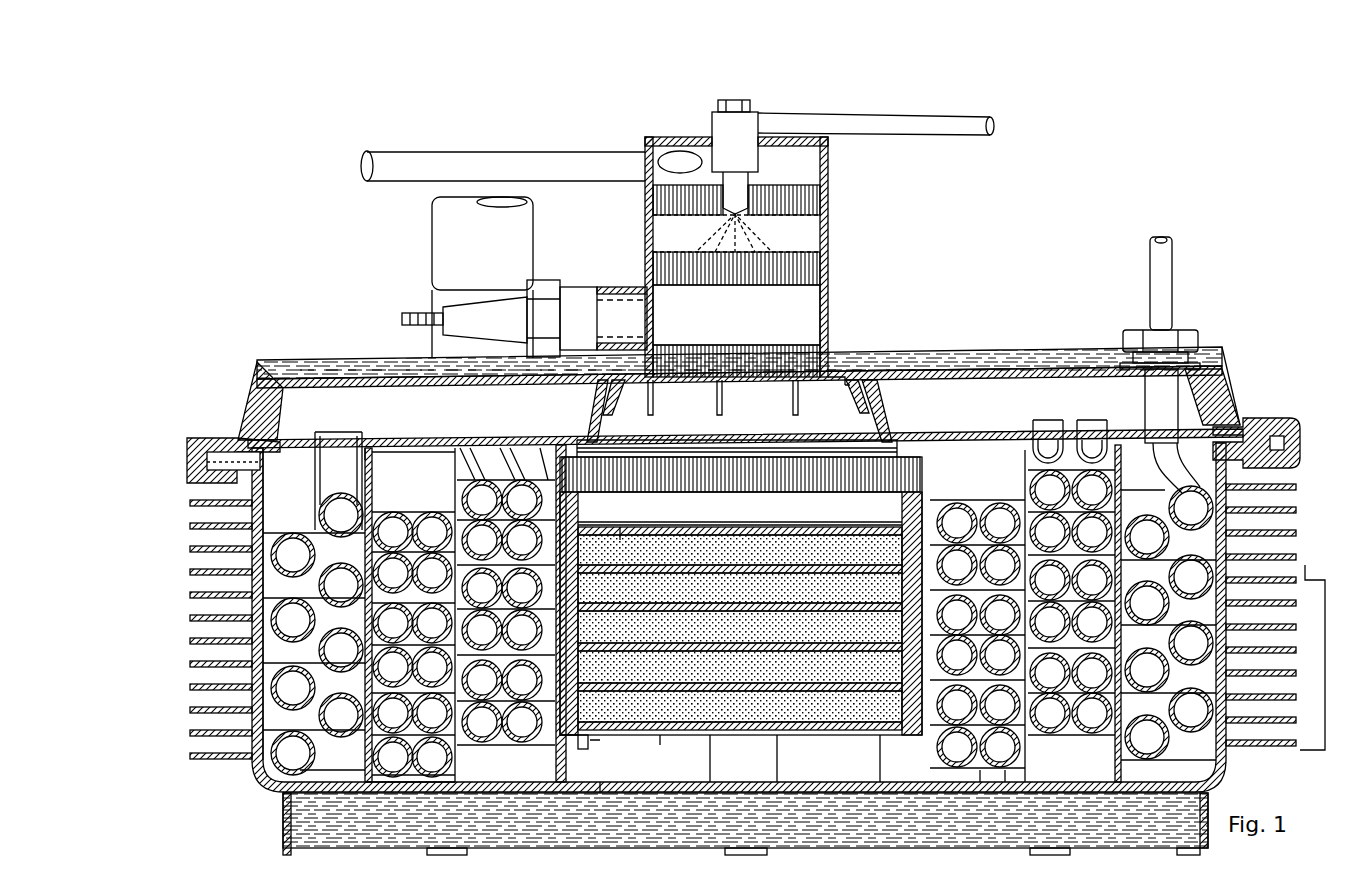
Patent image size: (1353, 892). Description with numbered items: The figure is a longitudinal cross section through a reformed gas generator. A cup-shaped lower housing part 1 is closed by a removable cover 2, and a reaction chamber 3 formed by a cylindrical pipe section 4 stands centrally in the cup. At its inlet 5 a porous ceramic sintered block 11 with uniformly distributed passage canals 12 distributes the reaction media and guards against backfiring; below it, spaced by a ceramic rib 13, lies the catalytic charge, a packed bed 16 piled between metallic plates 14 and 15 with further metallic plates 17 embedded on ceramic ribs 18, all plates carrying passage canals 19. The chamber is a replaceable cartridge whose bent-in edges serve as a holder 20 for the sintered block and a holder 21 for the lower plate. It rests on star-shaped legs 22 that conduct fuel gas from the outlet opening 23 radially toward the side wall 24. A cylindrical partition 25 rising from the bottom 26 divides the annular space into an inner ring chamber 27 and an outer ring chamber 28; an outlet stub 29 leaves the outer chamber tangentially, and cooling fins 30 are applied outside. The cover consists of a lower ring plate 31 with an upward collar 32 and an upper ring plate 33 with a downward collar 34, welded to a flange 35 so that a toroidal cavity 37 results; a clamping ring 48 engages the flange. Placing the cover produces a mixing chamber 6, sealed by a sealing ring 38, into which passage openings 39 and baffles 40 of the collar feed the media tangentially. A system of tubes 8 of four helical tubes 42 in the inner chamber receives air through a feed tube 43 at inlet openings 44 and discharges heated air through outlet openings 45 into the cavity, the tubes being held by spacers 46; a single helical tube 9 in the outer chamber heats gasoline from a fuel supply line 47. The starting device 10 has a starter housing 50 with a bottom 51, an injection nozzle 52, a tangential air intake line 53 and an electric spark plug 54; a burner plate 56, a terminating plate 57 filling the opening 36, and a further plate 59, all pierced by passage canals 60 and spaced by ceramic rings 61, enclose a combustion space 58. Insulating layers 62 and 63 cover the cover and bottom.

The lower housing part 1 is at (283, 790).
The removable cover 2 is at (726, 385).
The reaction chamber 3 is at (741, 587).
The cylindrical pipe section 4 is at (557, 738).
The inlet 5 is at (693, 455).
The mixing chamber 6 is at (848, 395).
The system of tubes 8 is at (1005, 775).
The tube 9 is at (300, 545).
The starting device 10 is at (677, 238).
The sintered block 11 is at (700, 500).
The passage canals 12 is at (650, 498).
The ceramic rib 13 is at (578, 510).
The metallic plate 14 is at (760, 527).
The metallic plate 15 is at (672, 738).
The packed bed 16 is at (625, 545).
The metallic plates 17 is at (715, 580).
The ceramic ribs 18 is at (592, 600).
The passage canals 19 is at (655, 580).
The holder 20 is at (566, 448).
The holder 21 is at (580, 740).
The legs 22 is at (693, 765).
The outlet opening 23 is at (850, 735).
The side wall 24 is at (263, 490).
The cylindrical partition 25 is at (382, 788).
The bottom 26 is at (420, 788).
The inner ring chamber 27 is at (395, 440).
The outer ring chamber 28 is at (300, 462).
The outlet stub 29 is at (1315, 645).
The cooling fins 30 is at (1300, 498).
The lower ring plate 31 is at (418, 438).
The collar 32 is at (898, 430).
The upper ring plate 33 is at (373, 388).
The collar 34 is at (272, 412).
The flange 35 is at (1262, 430).
The opening 36 is at (740, 388).
The toroidal cavity 37 is at (330, 400).
The sealing ring 38 is at (945, 445).
The passage openings 39 is at (605, 398).
The baffles 40 is at (600, 415).
The tubes 42 is at (430, 533).
The feed tube 43 is at (525, 230).
The inlet openings 44 is at (515, 458).
The outlet openings 45 is at (1092, 430).
The spacers 46 is at (980, 775).
The fuel supply line 47 is at (1165, 270).
The clamping ring 48 is at (205, 440).
The starter housing 50 is at (828, 148).
The bottom 51 is at (648, 140).
The injection nozzle 52 is at (715, 120).
The air intake line 53 is at (535, 165).
The electric spark plug 54 is at (575, 292).
The burner plate 56 is at (812, 265).
The terminating plate 57 is at (805, 352).
The combustion space 58 is at (790, 318).
The further plate 59 is at (812, 200).
The passage canals 60 is at (812, 228).
The ceramic ribs or rings 61 is at (645, 228).
The insulating layer 62 is at (400, 368).
The insulating layer 63 is at (612, 793).